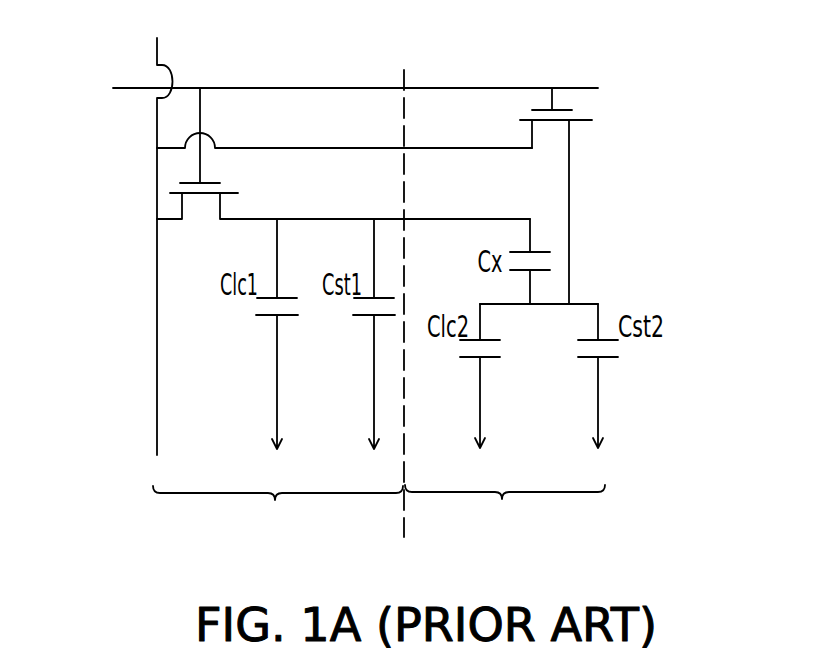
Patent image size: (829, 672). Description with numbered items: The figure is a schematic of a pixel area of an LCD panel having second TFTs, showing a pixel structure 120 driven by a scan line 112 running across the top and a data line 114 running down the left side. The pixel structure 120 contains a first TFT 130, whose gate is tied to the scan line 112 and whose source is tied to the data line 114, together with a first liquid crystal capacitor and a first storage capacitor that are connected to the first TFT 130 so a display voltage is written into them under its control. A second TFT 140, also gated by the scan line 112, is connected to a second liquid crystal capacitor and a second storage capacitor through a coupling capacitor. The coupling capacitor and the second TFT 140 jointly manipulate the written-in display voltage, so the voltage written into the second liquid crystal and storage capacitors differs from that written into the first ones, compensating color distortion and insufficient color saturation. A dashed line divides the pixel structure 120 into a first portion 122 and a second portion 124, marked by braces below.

The scan line 112 is at (523, 87).
The data line 114 is at (157, 339).
The pixel structure 120 is at (703, 512).
The first sub-pixel 122 is at (278, 512).
The second sub-pixel 124 is at (505, 510).
The first TFT 130 is at (221, 207).
The second TFT 140 is at (569, 133).